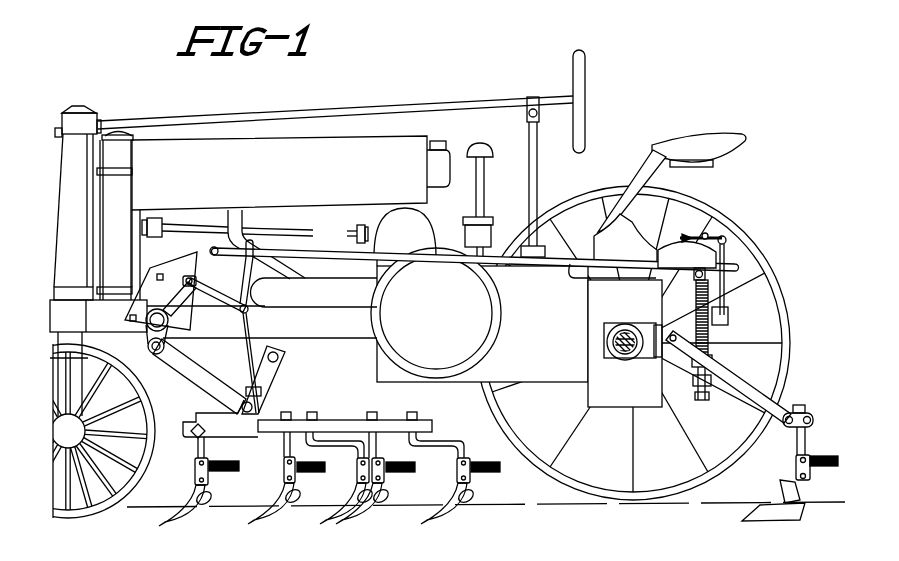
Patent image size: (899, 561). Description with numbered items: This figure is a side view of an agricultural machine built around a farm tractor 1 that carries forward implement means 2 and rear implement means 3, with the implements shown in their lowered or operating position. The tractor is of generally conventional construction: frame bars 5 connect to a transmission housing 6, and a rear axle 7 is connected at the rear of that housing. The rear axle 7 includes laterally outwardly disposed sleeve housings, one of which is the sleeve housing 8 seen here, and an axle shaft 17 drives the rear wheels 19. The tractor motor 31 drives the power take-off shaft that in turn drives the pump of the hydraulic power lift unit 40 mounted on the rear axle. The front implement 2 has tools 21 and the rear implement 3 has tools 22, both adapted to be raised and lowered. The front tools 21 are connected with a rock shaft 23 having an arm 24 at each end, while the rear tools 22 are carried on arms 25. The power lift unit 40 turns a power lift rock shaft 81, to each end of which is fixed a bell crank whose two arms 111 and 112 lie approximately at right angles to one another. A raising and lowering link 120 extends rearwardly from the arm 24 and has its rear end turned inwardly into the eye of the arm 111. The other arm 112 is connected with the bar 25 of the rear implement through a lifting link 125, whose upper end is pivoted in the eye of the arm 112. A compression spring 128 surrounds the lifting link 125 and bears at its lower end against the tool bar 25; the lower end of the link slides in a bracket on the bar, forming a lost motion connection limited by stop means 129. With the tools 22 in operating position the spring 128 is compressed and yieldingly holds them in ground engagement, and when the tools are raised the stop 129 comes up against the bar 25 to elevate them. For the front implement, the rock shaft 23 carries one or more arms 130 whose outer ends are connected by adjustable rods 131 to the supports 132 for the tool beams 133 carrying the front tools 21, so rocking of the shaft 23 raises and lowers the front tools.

The farm tractor 1 is at (433, 100).
The forward implement means 2 is at (288, 398).
The rear implement means 3 is at (787, 413).
The frame bars 5 is at (343, 316).
The transmission housing 6 is at (531, 350).
The rear axle 7 is at (596, 307).
The sleeve housing 8 is at (626, 358).
The axle shaft 17 is at (620, 358).
The rear wheels 19 is at (768, 280).
The tools 21 is at (318, 520).
The tools 22 is at (772, 510).
The rock shaft 23 is at (186, 280).
The arm 24 is at (210, 250).
The arms 25 is at (720, 375).
The tractor motor 31 is at (327, 216).
The hydraulic power lift unit 40 is at (668, 250).
The power lift rock shaft 81 is at (722, 238).
The bell crank arm 111 is at (740, 238).
The bell crank arm 112 is at (693, 276).
The raising and lowering link 120 is at (307, 252).
The lifting link 125 is at (694, 384).
The compression spring 128 is at (697, 324).
The stop means 129 is at (698, 398).
The arms 130 is at (226, 300).
The adjustable rods 131 is at (250, 326).
The supports 132 is at (268, 386).
The tool beams 133 is at (352, 420).